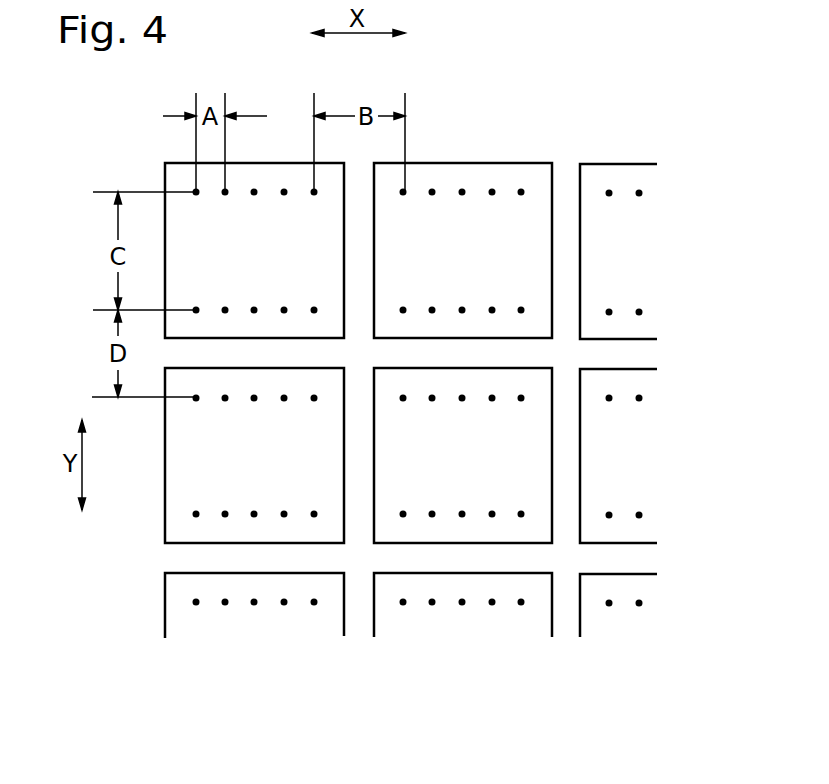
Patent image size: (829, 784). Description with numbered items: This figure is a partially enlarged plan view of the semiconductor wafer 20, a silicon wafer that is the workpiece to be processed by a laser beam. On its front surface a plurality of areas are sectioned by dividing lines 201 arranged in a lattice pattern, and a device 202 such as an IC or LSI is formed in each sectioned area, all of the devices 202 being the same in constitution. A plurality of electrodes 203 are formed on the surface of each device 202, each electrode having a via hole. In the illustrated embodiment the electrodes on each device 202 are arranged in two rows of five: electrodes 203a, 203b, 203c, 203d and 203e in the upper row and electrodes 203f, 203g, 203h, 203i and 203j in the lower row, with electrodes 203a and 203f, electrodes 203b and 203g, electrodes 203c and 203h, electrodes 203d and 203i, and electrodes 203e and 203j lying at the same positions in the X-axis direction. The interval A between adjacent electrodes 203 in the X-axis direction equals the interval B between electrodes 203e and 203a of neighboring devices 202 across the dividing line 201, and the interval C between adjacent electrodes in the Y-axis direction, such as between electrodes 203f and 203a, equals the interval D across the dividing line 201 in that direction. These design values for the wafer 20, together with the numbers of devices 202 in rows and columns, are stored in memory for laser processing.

The semiconductor wafer 20 is at (662, 116).
The dividing lines 201 is at (610, 353).
The device 202 is at (243, 265).
The electrodes 203 is at (410, 70).
The electrode 203a is at (405, 190).
The electrode 203b is at (434, 190).
The electrode 203c is at (464, 190).
The electrode 203d is at (494, 190).
The electrode 203e is at (525, 192).
The electrode 203f is at (402, 310).
The electrode 203g is at (431, 308).
The electrode 203h is at (462, 309).
The electrode 203i is at (492, 308).
The electrode 203j is at (523, 309).